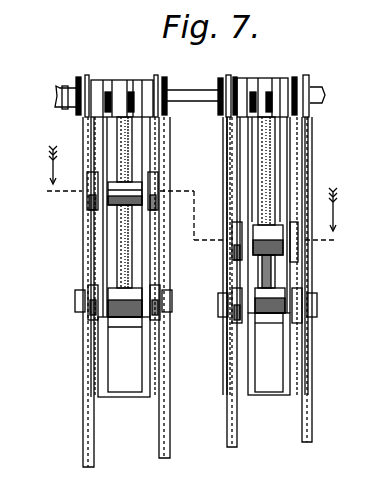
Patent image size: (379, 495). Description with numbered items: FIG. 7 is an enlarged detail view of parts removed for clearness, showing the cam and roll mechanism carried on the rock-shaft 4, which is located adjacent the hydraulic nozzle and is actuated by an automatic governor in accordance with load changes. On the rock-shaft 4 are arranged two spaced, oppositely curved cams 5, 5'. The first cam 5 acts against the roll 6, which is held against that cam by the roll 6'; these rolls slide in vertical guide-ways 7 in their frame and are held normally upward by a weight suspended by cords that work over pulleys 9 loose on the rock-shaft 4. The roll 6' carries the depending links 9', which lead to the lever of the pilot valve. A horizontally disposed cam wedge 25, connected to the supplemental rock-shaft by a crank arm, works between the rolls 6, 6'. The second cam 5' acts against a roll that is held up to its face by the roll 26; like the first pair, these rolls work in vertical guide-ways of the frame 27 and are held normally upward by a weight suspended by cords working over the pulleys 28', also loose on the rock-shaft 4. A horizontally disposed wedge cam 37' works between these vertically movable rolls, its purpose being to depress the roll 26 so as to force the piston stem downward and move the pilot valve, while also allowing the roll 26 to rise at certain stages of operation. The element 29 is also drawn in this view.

The rock-shaft 4 is at (62, 98).
The cam 5 is at (291, 171).
The cam 5' is at (151, 149).
The roll 6 is at (249, 248).
The roll 6' is at (260, 319).
The vertical guide-ways 7 is at (240, 176).
The pulleys 9 is at (192, 153).
The depending links 9' is at (284, 282).
The cam wedge 25 is at (110, 198).
The roll 26 is at (115, 318).
The frame 27 is at (104, 366).
The pulleys 28' is at (189, 86).
The bar 29 is at (159, 422).
The wedge cam 37' is at (91, 246).